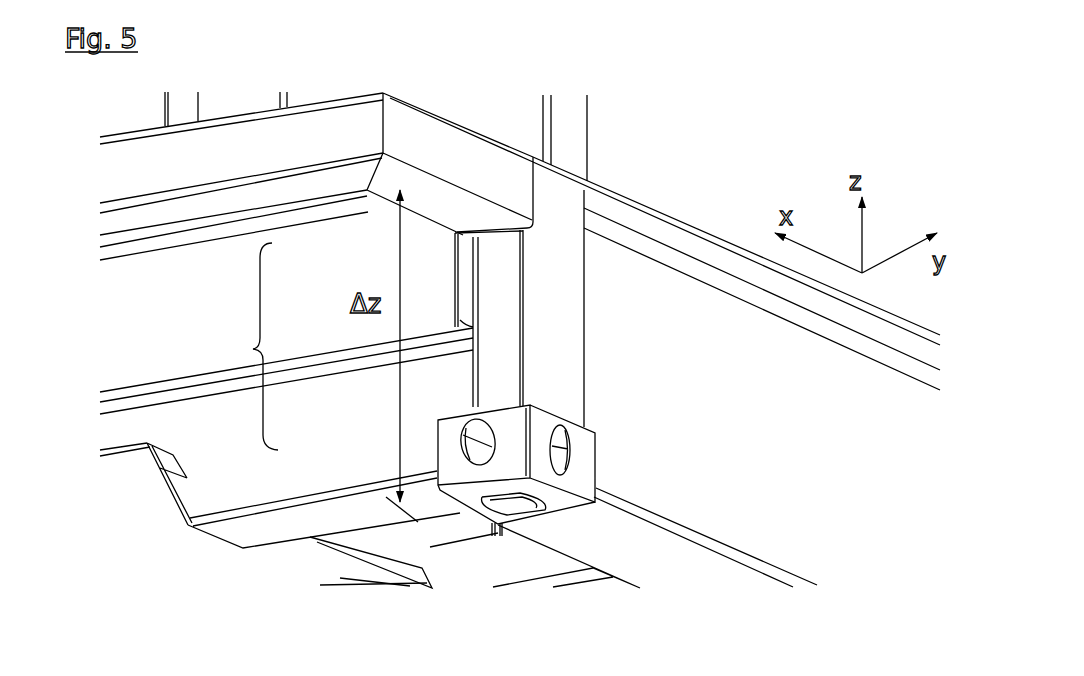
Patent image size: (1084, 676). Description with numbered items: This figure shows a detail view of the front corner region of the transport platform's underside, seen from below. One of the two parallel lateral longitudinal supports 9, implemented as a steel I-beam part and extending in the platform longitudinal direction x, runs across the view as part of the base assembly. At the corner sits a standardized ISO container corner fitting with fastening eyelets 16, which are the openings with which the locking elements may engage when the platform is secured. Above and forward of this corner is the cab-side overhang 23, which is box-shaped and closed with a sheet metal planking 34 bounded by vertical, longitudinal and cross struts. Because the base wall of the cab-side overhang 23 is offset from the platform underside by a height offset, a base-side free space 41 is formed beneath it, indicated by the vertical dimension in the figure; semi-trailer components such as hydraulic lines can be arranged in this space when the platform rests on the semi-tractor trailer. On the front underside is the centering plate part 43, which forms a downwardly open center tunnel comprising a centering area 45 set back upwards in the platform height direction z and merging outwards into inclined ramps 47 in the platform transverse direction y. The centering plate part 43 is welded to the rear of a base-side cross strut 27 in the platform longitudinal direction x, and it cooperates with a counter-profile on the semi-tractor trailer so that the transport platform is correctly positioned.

The lateral longitudinal support 9 is at (802, 456).
The fastening eyelet 16 is at (563, 443).
The cab-side overhang 23 is at (490, 175).
The base-side cross strut 27 is at (572, 580).
The sheet metal planking 34 is at (590, 130).
The base-side free space 41 is at (253, 349).
The centering plate part 43 is at (82, 573).
The centering area 45 is at (263, 565).
The inclined ramp 47 is at (372, 568).